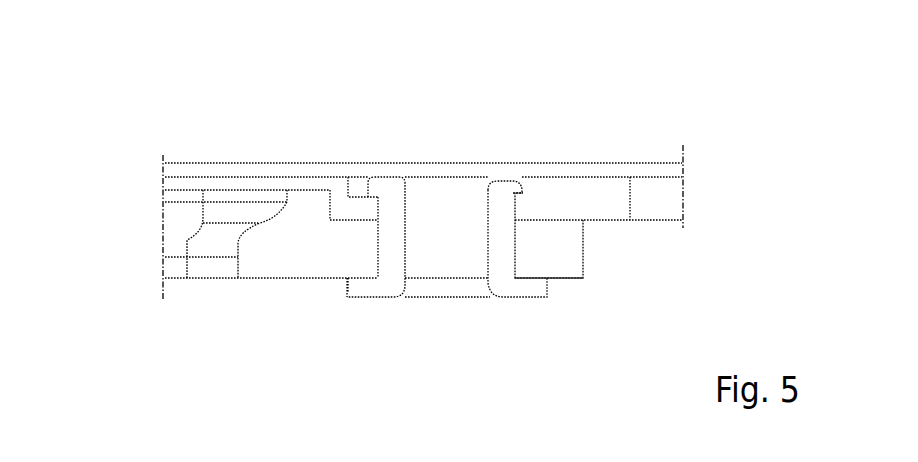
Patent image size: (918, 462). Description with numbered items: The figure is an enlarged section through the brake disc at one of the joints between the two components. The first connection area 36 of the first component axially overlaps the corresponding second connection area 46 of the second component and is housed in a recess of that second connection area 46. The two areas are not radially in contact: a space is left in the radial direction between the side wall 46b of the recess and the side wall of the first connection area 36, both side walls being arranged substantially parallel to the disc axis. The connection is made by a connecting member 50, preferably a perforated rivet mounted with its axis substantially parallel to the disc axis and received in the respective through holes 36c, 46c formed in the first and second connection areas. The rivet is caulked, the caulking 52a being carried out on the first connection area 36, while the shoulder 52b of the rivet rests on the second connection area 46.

The first connection area 36 is at (363, 208).
The through hole 36c is at (513, 213).
The second connection area 46 is at (355, 233).
The side wall 46b is at (317, 212).
The through hole 46c is at (515, 243).
The connecting member 50 is at (468, 244).
The caulking 52a is at (385, 190).
The shoulder 52b is at (365, 288).